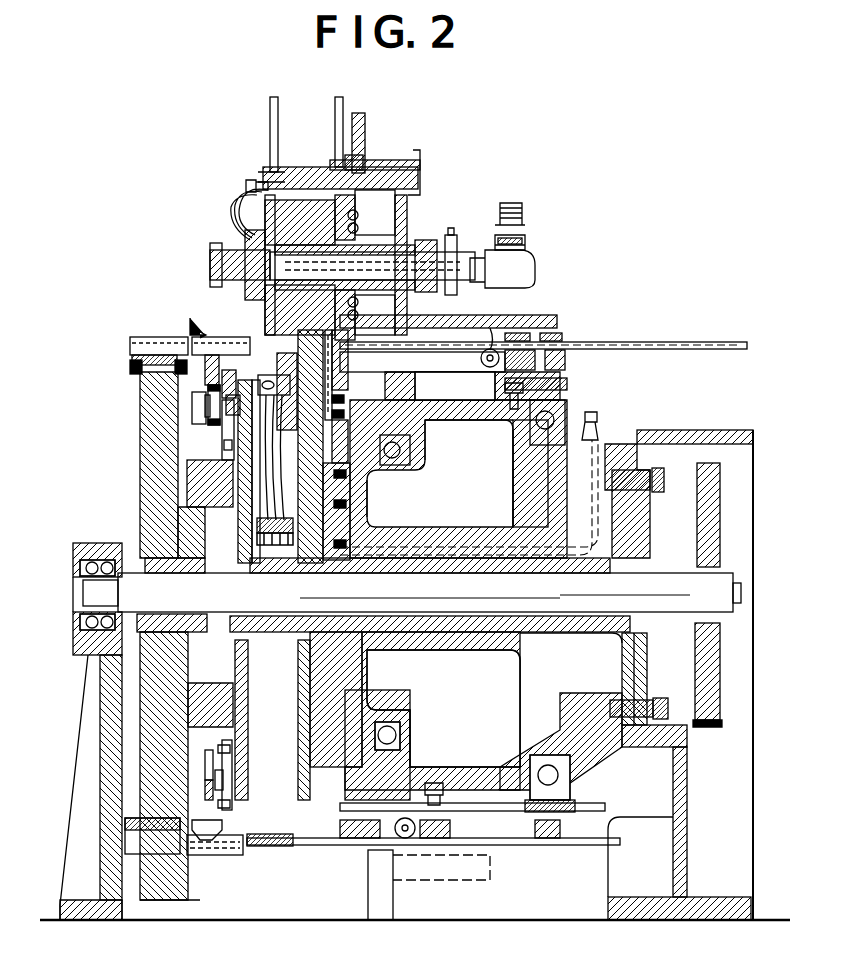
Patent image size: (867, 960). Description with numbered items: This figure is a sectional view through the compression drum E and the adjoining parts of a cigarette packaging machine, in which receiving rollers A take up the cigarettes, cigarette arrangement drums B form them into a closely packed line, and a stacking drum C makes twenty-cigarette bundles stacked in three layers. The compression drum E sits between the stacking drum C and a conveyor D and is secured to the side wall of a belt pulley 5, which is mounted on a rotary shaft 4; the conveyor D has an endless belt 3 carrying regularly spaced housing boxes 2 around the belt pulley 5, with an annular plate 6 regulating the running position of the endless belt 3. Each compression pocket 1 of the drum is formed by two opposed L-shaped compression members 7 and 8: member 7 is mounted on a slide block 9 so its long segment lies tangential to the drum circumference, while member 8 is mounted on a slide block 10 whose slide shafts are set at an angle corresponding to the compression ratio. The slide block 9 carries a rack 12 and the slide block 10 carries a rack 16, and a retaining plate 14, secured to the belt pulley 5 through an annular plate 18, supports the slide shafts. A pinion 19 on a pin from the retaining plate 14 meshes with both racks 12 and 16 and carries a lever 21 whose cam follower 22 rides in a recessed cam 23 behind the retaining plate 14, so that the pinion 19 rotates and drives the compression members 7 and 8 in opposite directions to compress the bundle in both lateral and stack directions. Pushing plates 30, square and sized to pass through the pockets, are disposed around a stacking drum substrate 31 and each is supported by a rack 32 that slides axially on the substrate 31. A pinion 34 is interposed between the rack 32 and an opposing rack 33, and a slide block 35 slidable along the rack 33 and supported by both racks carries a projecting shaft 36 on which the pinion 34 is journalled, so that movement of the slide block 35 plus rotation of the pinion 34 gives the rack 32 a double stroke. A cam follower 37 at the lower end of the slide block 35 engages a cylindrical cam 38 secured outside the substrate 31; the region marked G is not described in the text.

The compression pocket 1 is at (208, 355).
The housing box 2 is at (130, 340).
The endless belt 3 is at (160, 365).
The rotary shaft 4 is at (215, 612).
The belt pulley 5 is at (140, 520).
The annular plate 6 is at (135, 362).
The L-shaped compression member 7 is at (212, 852).
The L-shaped compression member 8 is at (205, 360).
The slide block 9 is at (236, 770).
The slide block 10 is at (225, 445).
The rack 12 is at (198, 420).
The retaining plate 14 is at (232, 805).
The rack 16 is at (210, 390).
The annular plate 18 is at (190, 485).
The pinion 19 is at (225, 390).
The lever 21 is at (207, 410).
The cam follower 22 is at (232, 412).
The recessed cam 23 is at (250, 525).
The pushing plate 30 is at (440, 322).
The stacking drum substrate 31 is at (565, 358).
The rack 32 is at (675, 342).
The rack 33 is at (567, 378).
The pinion 34 is at (520, 400).
The slide block 35 is at (530, 336).
The projecting shaft 36 is at (497, 348).
The cam follower 37 is at (512, 412).
The cylindrical cam 38 is at (590, 425).
The receiving roller A is at (252, 160).
The cigarette arrangement drum B is at (212, 235).
The stacking drum C is at (272, 848).
The conveyor D is at (130, 337).
The compression drum E is at (200, 305).
The gap G is at (196, 883).